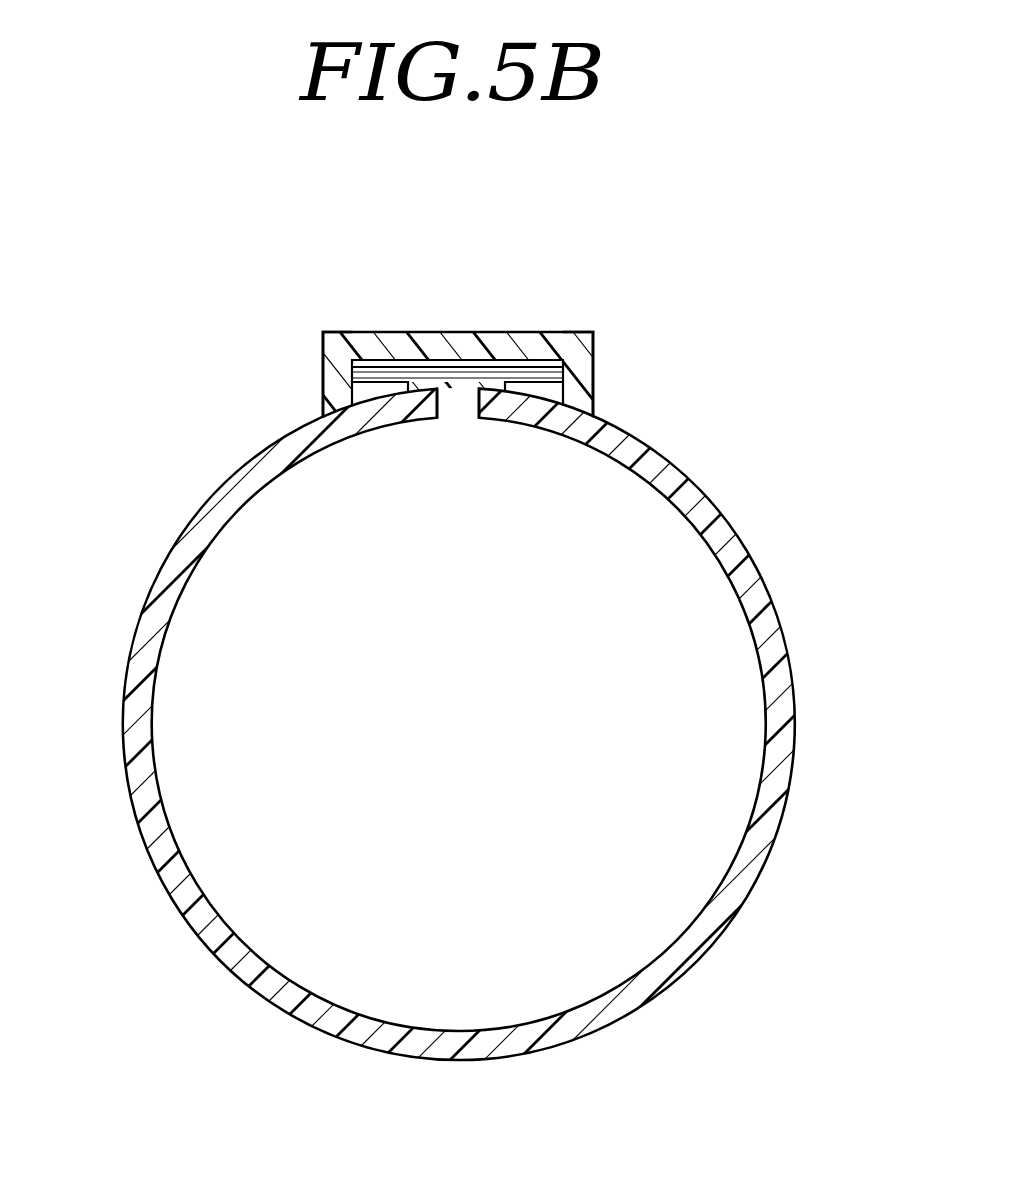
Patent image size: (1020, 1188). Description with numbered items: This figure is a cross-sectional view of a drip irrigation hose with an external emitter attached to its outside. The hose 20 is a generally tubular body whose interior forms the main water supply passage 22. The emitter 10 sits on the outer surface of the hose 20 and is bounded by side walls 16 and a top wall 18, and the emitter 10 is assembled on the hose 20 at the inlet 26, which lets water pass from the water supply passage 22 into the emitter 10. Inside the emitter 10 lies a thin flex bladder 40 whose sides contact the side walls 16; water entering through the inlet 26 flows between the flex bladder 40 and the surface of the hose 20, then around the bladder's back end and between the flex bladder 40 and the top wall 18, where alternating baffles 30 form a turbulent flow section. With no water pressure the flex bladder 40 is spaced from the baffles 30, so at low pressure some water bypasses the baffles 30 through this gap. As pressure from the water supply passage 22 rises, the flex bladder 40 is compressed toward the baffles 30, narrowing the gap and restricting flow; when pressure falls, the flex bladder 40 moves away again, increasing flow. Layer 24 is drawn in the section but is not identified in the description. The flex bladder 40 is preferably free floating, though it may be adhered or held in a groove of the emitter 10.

The emitter 10 is at (424, 277).
The side walls 16 is at (335, 347).
The top wall 18 is at (565, 340).
The drip irrigation hose 20 is at (745, 573).
The water supply passage 22 is at (630, 867).
The adhesive layer 24 is at (434, 385).
The inlet 26 is at (457, 400).
The baffles 30 is at (363, 392).
The flex bladder 40 is at (471, 372).